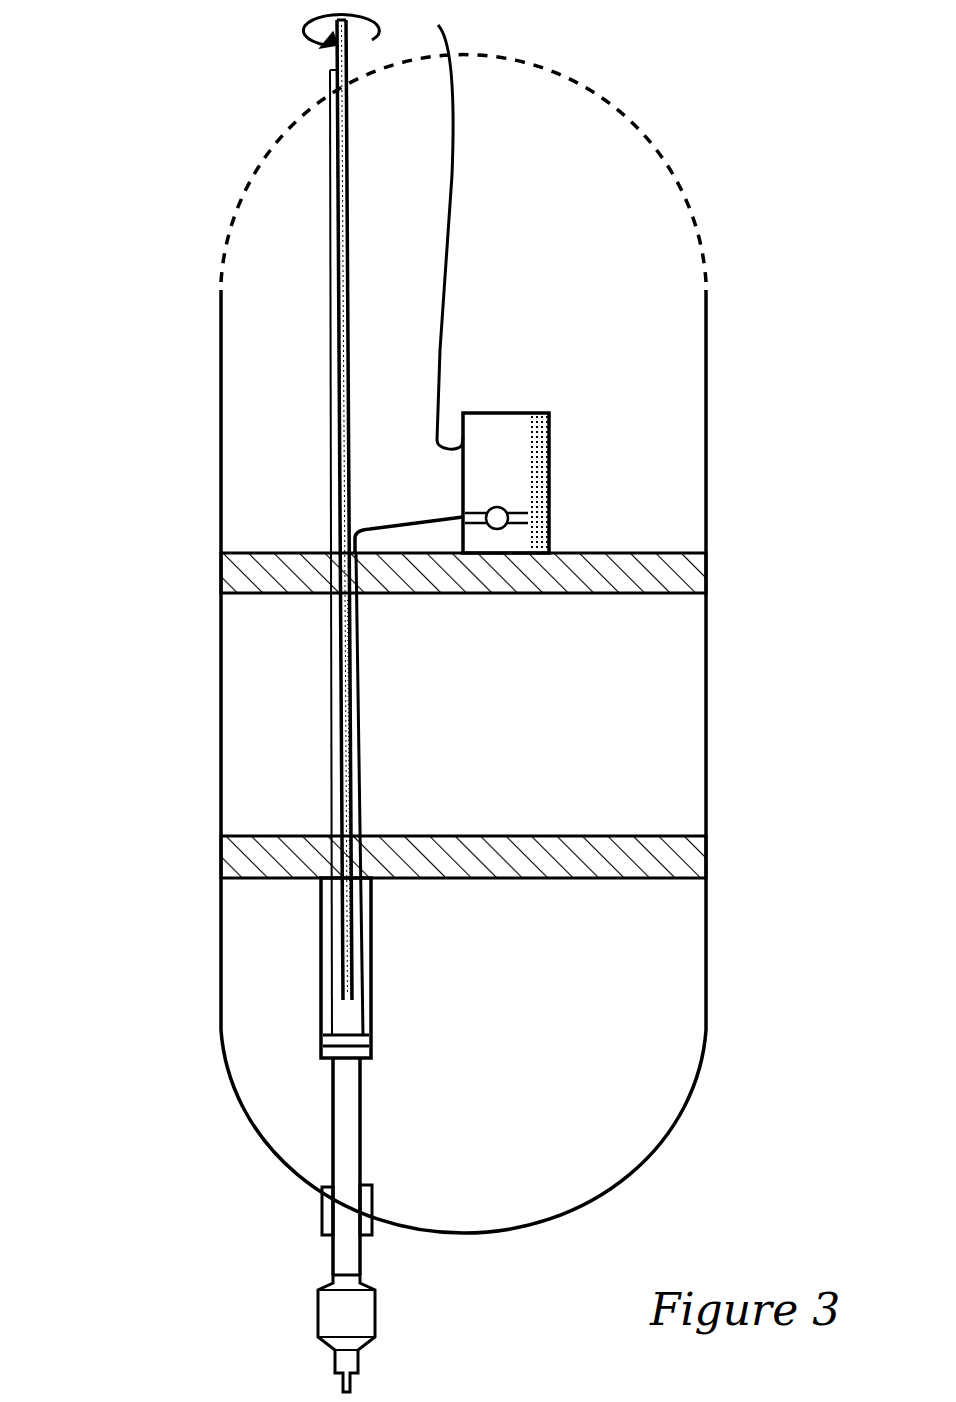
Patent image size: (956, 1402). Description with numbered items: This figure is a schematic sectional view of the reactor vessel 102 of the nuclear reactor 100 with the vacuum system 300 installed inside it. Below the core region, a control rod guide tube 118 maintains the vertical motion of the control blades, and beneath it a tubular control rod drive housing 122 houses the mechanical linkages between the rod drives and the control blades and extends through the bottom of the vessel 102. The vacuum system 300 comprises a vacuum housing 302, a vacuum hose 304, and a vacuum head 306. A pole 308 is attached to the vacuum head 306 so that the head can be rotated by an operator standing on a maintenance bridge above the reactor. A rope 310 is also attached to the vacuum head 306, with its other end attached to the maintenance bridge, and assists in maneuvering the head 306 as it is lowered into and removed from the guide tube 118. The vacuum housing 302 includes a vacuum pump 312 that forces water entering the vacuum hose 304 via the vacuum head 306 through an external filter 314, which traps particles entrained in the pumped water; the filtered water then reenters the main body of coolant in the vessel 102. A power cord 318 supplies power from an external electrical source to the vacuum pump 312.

The nuclear reactor 100 is at (167, 75).
The reactor vessel 102 is at (221, 325).
The control rod guide tube 118 is at (372, 963).
The control rod drive housing 122 is at (360, 1135).
The vacuum system 300 is at (577, 400).
The vacuum housing 302 is at (463, 494).
The vacuum hose 304 is at (357, 695).
The vacuum head 306 is at (372, 1046).
The pole 308 is at (348, 195).
The rope 310 is at (331, 790).
The vacuum pump 312 is at (494, 508).
The external filter 314 is at (538, 413).
The power cord 318 is at (452, 145).